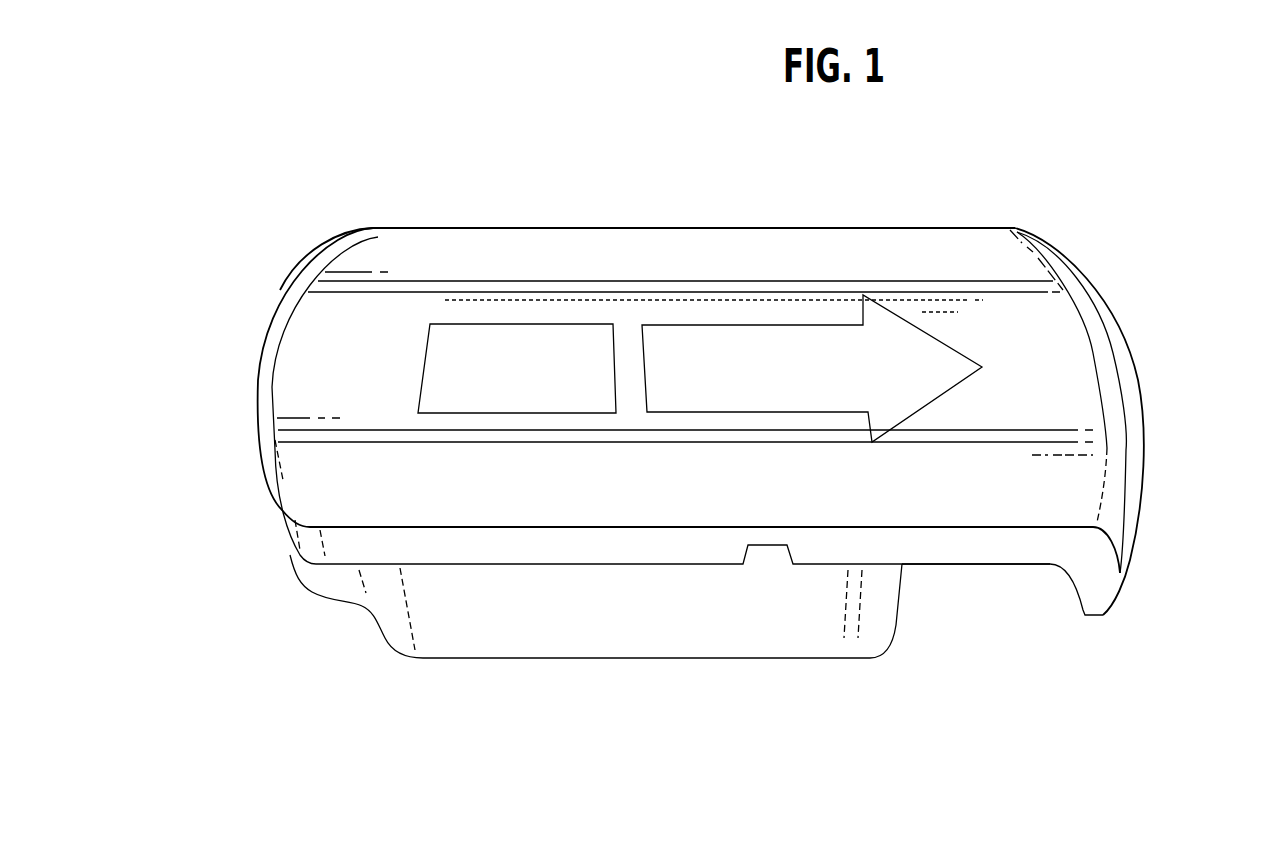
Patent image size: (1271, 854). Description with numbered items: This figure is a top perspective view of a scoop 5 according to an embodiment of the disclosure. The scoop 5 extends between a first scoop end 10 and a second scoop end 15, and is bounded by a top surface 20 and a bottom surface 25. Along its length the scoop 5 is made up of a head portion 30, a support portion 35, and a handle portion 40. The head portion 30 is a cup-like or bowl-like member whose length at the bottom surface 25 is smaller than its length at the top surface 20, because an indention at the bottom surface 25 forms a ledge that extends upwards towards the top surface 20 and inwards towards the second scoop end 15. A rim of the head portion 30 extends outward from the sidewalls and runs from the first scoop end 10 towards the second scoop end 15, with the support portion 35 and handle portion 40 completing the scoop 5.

The scoop 5 is at (172, 212).
The first scoop end 10 is at (292, 557).
The second scoop end 15 is at (1128, 378).
The top surface 20 is at (668, 230).
The bottom surface 25 is at (434, 640).
The head portion 30 is at (812, 622).
The support portion 35 is at (925, 567).
The handle portion 40 is at (460, 228).